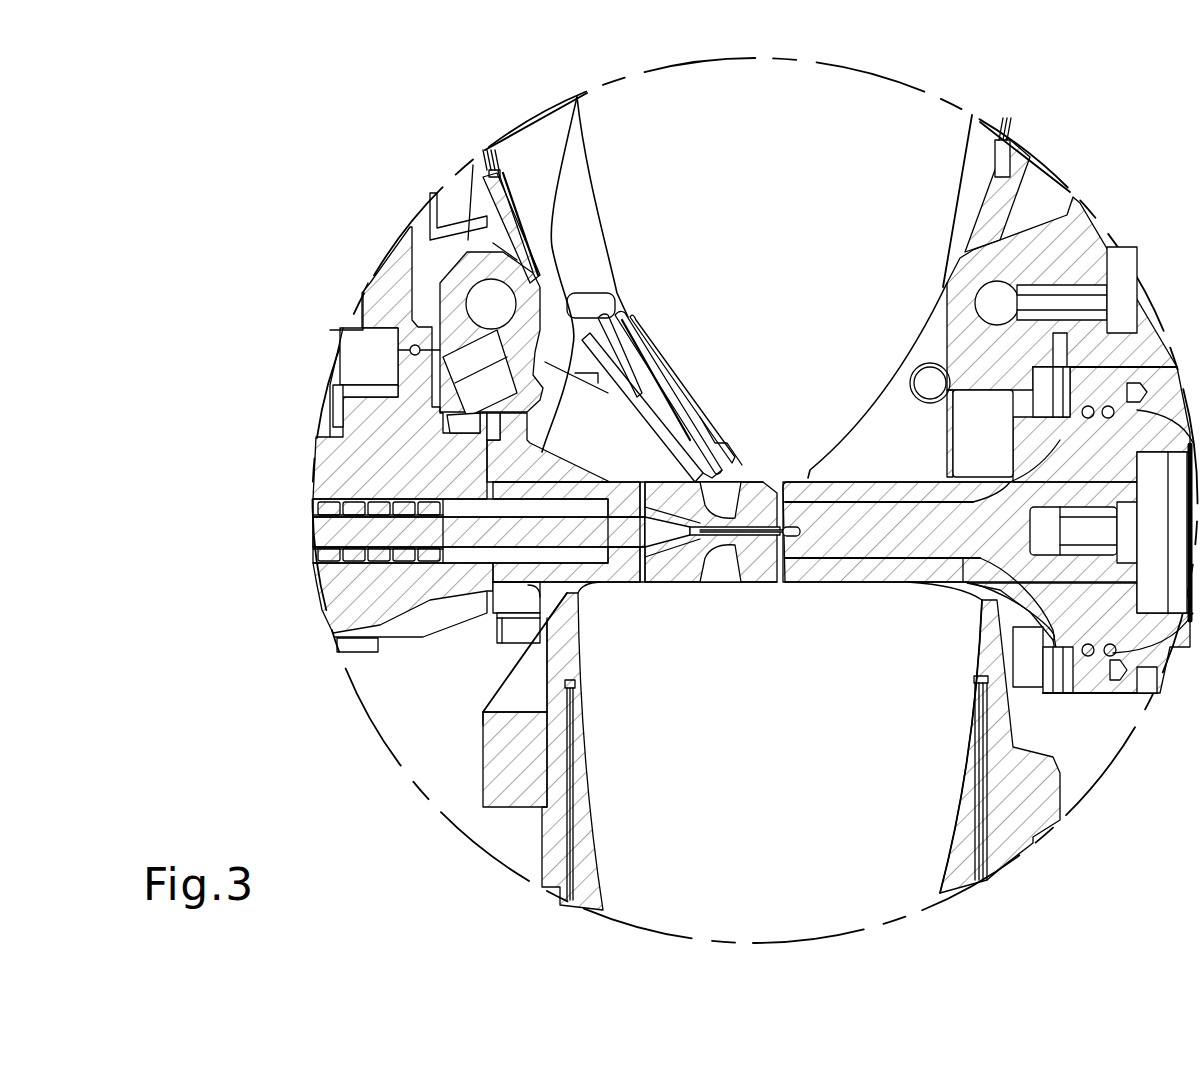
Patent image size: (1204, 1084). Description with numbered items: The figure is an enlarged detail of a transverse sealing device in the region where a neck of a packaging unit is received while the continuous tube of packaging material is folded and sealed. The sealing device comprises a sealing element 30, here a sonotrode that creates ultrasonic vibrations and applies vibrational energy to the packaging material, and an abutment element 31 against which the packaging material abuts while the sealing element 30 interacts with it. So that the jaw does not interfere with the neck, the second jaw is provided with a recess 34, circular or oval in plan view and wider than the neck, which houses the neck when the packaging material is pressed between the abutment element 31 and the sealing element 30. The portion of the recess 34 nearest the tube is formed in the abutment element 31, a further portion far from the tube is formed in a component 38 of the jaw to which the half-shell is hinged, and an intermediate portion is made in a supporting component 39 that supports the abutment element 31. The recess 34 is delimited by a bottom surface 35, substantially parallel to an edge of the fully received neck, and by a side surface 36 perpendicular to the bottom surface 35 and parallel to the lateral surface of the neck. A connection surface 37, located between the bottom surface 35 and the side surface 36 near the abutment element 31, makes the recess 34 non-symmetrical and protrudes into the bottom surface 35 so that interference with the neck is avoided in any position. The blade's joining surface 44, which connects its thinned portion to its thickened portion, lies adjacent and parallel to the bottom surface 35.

The sealing element 30 is at (900, 525).
The abutment element 31 is at (760, 565).
The recess 34 is at (545, 290).
The bottom surface 35 is at (566, 462).
The side surface 36 is at (547, 380).
The connection surface 37 is at (727, 490).
The component 38 is at (545, 327).
The supporting component 39 is at (530, 495).
The joining surface 44 is at (670, 512).